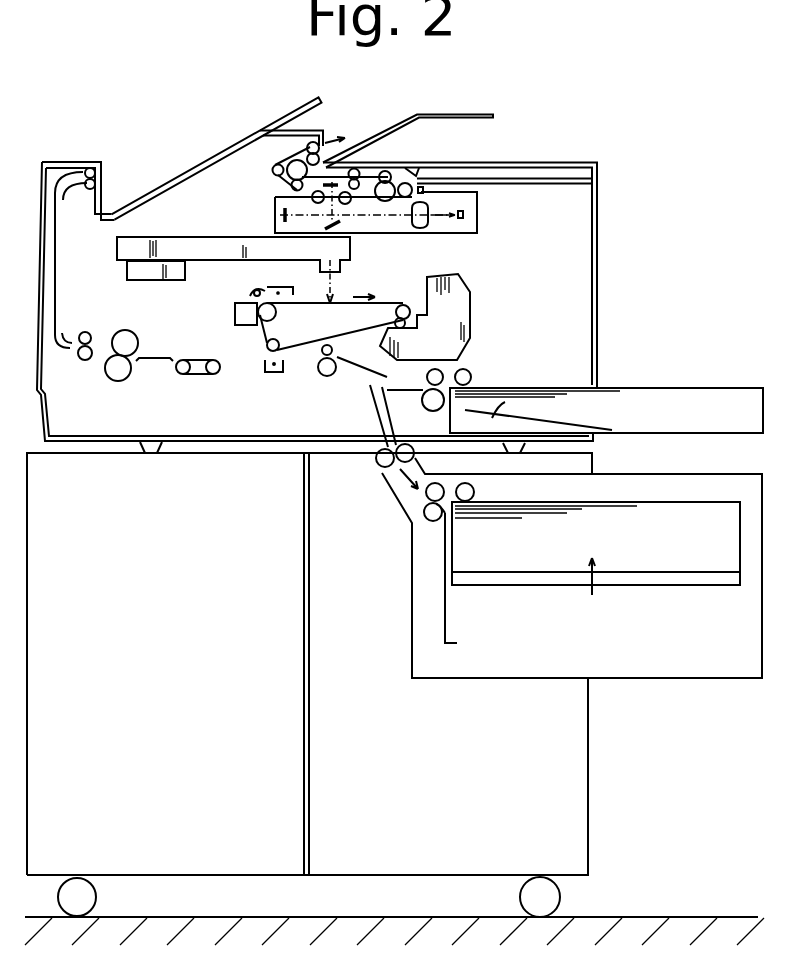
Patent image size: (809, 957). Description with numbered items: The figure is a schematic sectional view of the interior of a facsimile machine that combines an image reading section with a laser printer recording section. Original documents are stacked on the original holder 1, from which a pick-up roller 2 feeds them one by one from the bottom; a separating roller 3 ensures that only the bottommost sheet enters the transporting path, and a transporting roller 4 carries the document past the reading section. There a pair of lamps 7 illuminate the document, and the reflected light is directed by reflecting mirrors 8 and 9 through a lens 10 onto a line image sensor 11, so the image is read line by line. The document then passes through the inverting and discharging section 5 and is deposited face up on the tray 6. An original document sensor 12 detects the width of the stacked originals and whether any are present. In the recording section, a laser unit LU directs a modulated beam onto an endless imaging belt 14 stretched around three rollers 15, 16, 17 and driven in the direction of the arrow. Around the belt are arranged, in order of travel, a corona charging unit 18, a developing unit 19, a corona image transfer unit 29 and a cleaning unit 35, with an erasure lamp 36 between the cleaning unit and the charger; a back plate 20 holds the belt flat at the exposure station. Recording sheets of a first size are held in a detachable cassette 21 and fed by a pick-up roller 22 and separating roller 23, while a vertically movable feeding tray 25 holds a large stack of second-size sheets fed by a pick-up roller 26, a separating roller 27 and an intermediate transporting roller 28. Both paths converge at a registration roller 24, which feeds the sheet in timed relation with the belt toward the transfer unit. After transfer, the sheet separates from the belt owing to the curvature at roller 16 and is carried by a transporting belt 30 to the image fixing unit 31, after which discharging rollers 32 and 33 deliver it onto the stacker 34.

The original holder 1 is at (535, 180).
The pick-up roller 2 is at (412, 184).
The separating roller 3 is at (392, 173).
The transporting roller 4 is at (360, 172).
The inverting and discharging section 5 is at (272, 152).
The tray 6 is at (485, 112).
The lamps 7 is at (310, 197).
The reflecting mirror 8 is at (340, 228).
The reflecting mirror 9 is at (283, 216).
The lens 10 is at (421, 228).
The line image sensor 11 is at (462, 220).
The original document sensor 12 is at (424, 188).
The imaging belt 14 is at (322, 303).
The roller 15 is at (402, 306).
The roller 16 is at (278, 343).
The roller 17 is at (263, 322).
The corona charging unit 18 is at (285, 290).
The developing unit 19 is at (471, 313).
The back plate 20 is at (330, 307).
The cassette 21 is at (731, 387).
The pick-up roller 22 is at (468, 370).
The separating roller 23 is at (435, 368).
The registration roller 24 is at (330, 377).
The feeding tray 25 is at (647, 586).
The pick-up roller 26 is at (475, 493).
The separating roller 27 is at (437, 523).
The intermediate transporting roller 28 is at (378, 467).
The corona image transfer unit 29 is at (273, 374).
The transporting belt 30 is at (200, 375).
The image fixing unit 31 is at (118, 381).
The discharging roller 32 is at (84, 360).
The discharging roller 33 is at (88, 190).
The stacker 34 is at (153, 192).
The cleaning unit 35 is at (233, 315).
The erasure lamp 36 is at (252, 290).
The laser unit LU is at (173, 237).